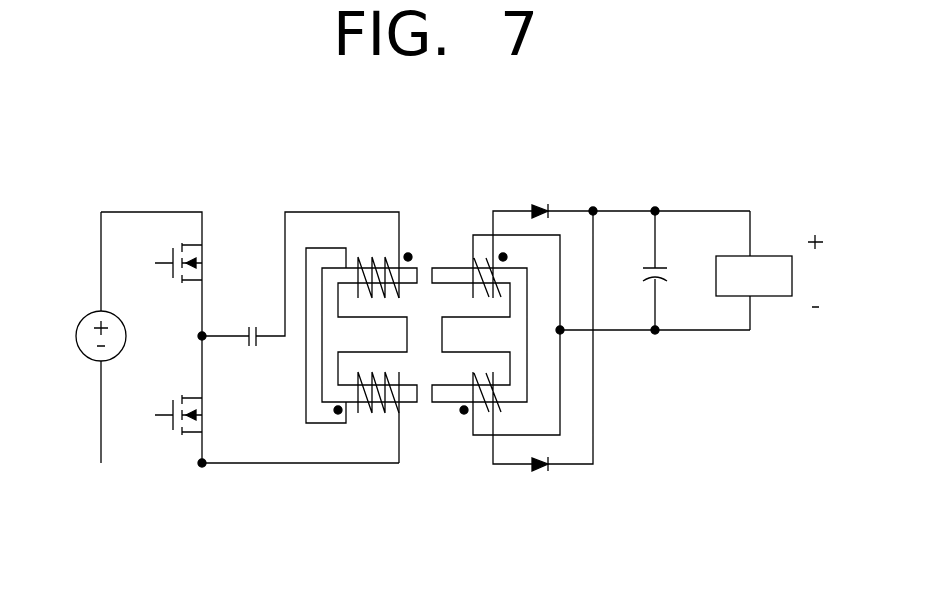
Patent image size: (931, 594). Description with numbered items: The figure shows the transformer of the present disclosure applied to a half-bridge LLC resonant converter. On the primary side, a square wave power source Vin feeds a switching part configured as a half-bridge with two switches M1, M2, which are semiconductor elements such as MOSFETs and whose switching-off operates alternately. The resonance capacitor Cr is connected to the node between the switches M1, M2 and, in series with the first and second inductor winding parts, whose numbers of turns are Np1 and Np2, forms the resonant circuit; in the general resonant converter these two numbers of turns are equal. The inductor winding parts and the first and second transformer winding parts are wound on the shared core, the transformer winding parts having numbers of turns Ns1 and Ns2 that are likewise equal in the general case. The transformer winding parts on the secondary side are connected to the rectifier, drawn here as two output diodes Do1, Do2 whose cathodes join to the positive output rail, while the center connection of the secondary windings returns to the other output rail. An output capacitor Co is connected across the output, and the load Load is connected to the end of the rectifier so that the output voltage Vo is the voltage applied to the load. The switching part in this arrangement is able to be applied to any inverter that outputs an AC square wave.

The square wave power source Vin is at (85, 336).
The switch M1 is at (163, 263).
The switch M2 is at (163, 415).
The resonance capacitor Cr is at (256, 320).
The number of turns of the first inductor winding part Np1 is at (384, 260).
The number of turns of the second inductor winding part Np2 is at (366, 409).
The number of turns of the first transformer winding part Ns1 is at (471, 266).
The number of turns of the second transformer winding part Ns2 is at (468, 407).
The output diode Do1 is at (543, 196).
The output diode Do2 is at (543, 483).
The output capacitor Co is at (670, 270).
The load Load is at (754, 270).
The output voltage Vo is at (816, 271).